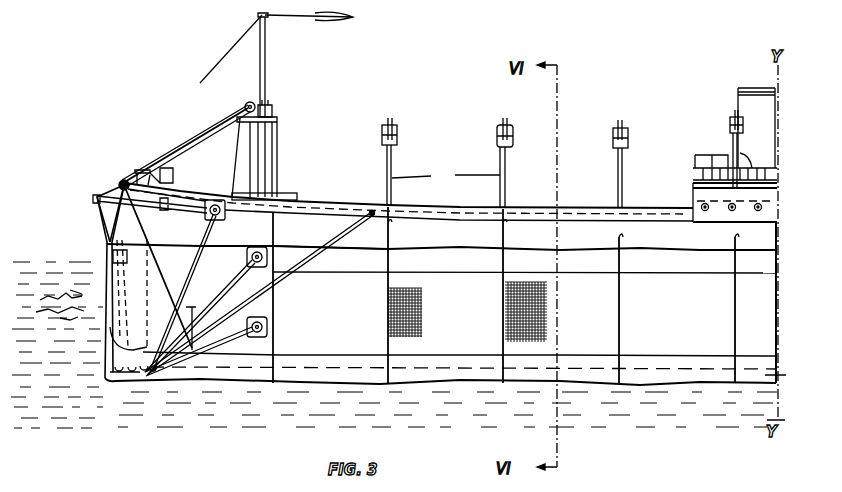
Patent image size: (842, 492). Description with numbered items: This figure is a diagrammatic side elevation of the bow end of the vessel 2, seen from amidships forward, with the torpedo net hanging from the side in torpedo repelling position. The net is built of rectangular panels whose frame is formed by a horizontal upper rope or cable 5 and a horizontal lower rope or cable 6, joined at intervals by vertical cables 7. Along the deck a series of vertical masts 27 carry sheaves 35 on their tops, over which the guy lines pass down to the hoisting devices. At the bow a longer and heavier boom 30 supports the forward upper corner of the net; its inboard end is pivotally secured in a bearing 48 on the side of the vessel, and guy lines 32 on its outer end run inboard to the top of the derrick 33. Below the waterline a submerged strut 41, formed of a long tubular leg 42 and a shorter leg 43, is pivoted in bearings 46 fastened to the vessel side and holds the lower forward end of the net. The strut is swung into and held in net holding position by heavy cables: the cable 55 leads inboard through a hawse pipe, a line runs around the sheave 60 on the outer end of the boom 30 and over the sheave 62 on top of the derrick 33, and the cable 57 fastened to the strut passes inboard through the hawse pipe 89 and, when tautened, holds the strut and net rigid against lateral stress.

The vessel 2 is at (436, 283).
The upper rope or cable 5 is at (355, 246).
The lower rope or cable 6 is at (378, 383).
The vertical cables 7 is at (274, 330).
The vertical masts 27 is at (633, 174).
The bow boom 30 is at (185, 210).
The guy lines 32 is at (200, 137).
The derrick 33 is at (267, 152).
The sheaves 35 is at (390, 123).
The submerged strut 41 is at (199, 331).
The long tubular leg 42 is at (218, 348).
The shorter leg 43 is at (214, 288).
The bearings 46 is at (273, 245).
The bearing 48 is at (221, 221).
The cable 55 is at (150, 258).
The cable 57 is at (290, 277).
The sheave 60 is at (205, 131).
The sheave 62 is at (248, 98).
The hawse pipe 89 is at (373, 215).